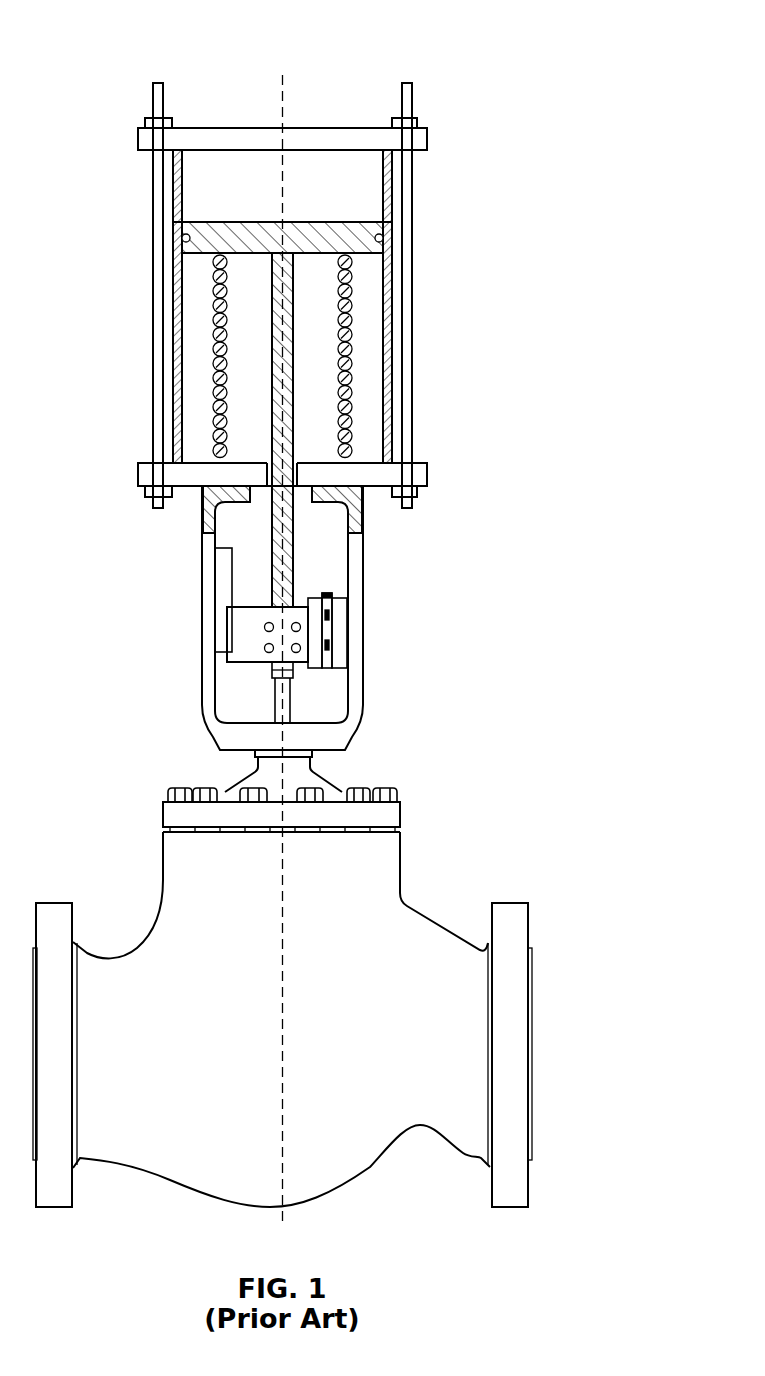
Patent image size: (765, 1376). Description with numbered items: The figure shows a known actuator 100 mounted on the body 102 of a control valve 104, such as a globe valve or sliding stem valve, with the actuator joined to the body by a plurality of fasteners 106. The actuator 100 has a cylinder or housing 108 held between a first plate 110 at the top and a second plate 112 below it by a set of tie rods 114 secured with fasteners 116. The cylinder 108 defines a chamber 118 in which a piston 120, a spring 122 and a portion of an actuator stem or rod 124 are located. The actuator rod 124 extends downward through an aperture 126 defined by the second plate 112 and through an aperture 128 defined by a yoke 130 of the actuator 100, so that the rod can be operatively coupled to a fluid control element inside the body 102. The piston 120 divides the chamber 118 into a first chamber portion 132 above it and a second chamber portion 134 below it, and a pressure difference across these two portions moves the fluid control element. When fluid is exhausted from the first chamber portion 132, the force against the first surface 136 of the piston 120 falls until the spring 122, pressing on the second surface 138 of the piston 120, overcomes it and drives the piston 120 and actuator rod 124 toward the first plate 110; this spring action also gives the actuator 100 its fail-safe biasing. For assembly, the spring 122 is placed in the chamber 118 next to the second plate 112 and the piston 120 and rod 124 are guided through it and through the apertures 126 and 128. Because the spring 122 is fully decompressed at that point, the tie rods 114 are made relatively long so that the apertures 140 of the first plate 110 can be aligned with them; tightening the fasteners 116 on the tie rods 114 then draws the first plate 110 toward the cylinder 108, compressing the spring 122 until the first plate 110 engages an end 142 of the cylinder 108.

The actuator 100 is at (567, 58).
The body 102 is at (386, 891).
The control valve 104 is at (525, 747).
The fasteners 106 is at (180, 792).
The cylinder 108 is at (177, 407).
The first plate 110 is at (367, 133).
The second plate 112 is at (427, 470).
The tie rods 114 is at (158, 83).
The fasteners 116 is at (147, 122).
The chamber 118 is at (373, 208).
The piston 120 is at (387, 260).
The spring 122 is at (347, 372).
The actuator stem or rod 124 is at (280, 340).
The aperture 126 is at (362, 498).
The aperture 128 is at (255, 502).
The yoke 130 is at (208, 620).
The first chamber portion 132 is at (208, 200).
The second chamber portion 134 is at (197, 292).
The first surface 136 is at (357, 222).
The second surface 138 is at (197, 257).
The apertures 140 is at (168, 145).
The end 142 is at (387, 160).